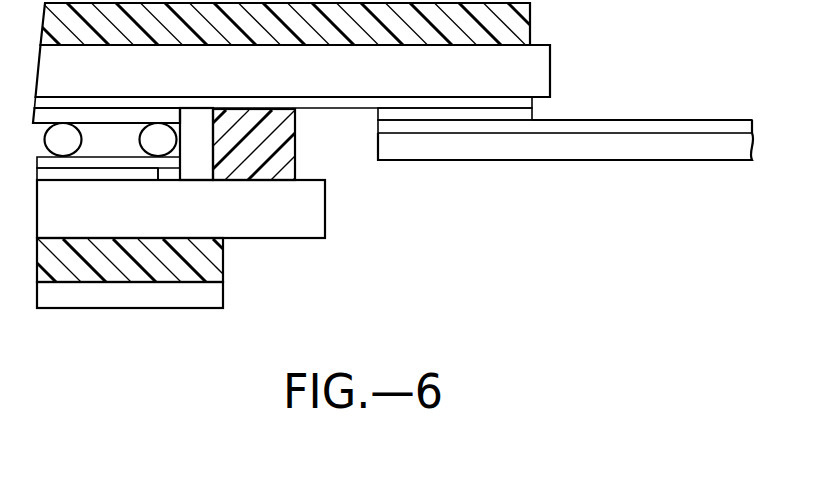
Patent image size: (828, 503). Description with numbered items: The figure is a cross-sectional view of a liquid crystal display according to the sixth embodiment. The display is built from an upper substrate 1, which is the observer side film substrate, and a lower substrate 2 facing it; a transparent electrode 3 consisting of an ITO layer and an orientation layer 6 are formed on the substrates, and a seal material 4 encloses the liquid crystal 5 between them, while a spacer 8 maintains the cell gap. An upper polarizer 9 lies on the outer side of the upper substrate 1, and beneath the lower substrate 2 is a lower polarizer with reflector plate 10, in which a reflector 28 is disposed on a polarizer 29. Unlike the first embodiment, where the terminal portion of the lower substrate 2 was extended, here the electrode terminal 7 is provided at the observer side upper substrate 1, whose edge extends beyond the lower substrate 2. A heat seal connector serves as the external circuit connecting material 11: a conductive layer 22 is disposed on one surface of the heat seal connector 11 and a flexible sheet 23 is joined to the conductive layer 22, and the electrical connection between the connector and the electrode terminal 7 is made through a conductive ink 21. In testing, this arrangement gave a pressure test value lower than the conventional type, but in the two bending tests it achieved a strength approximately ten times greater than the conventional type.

The upper substrate 1 is at (545, 68).
The lower substrate 2 is at (318, 213).
The transparent electrode 3 is at (108, 102).
The seal material 4 is at (286, 152).
The liquid crystal 5 is at (196, 164).
The orientation layer 6 is at (75, 117).
The electrode terminal 7 is at (433, 102).
The spacer 8 is at (156, 146).
The upper polarizer 9 is at (530, 20).
The lower polarizer with reflector plate 10 is at (173, 297).
The external circuit connecting material 11 is at (640, 162).
The conductive ink 21 is at (503, 115).
The conductive layer 22 is at (676, 125).
The flexible sheet 23 is at (703, 145).
The reflector 28 is at (222, 296).
The polarizer 29 is at (222, 260).